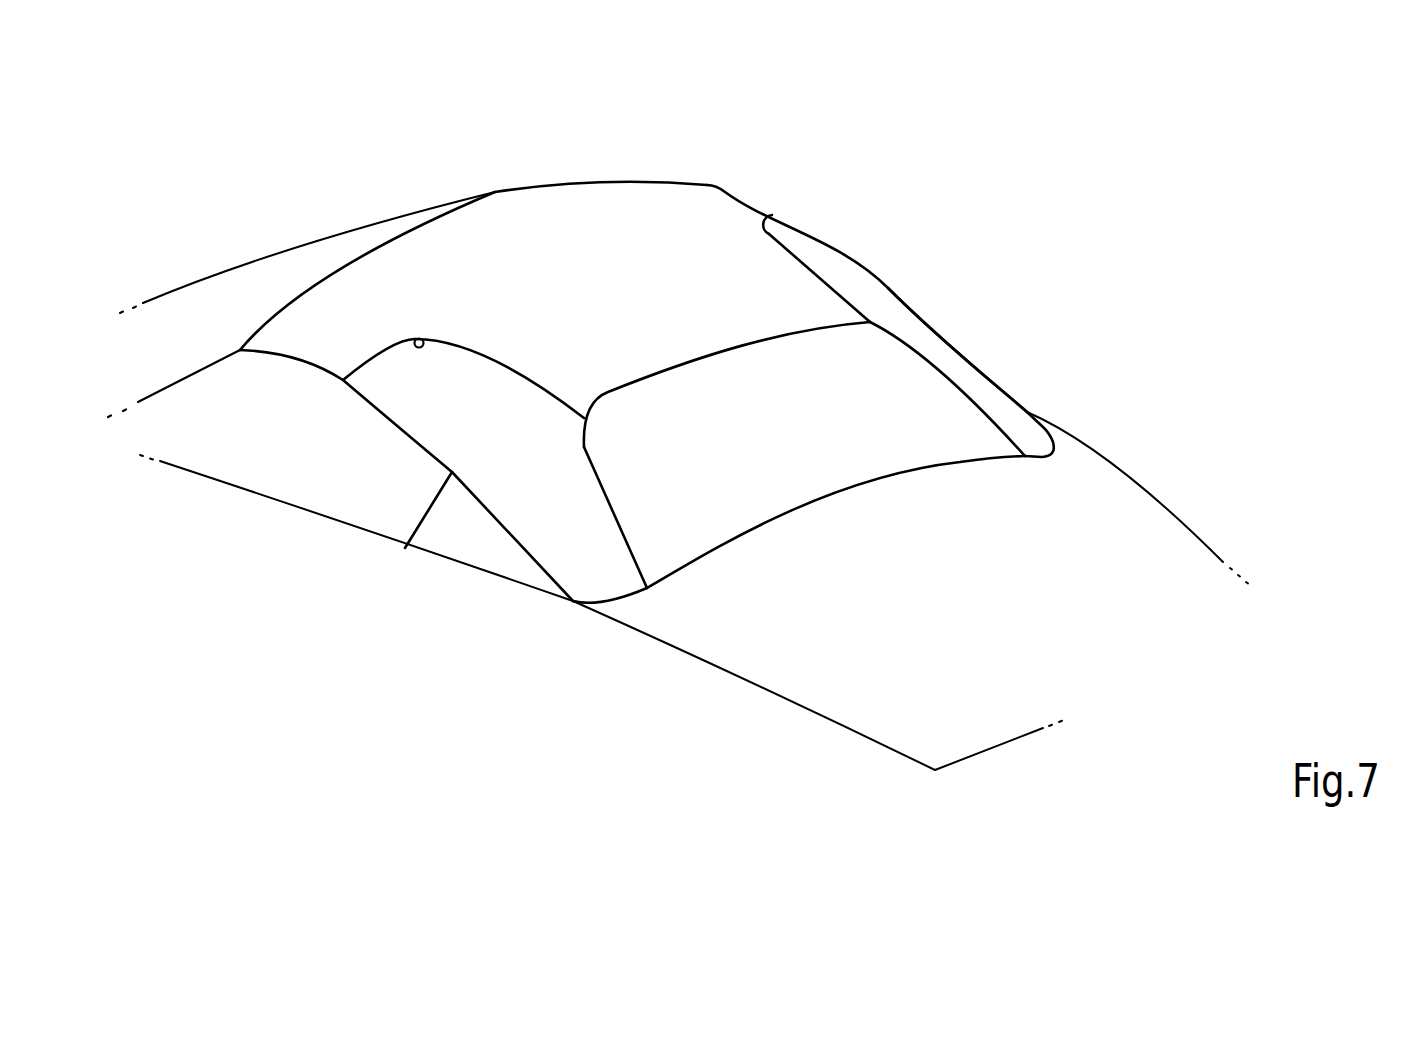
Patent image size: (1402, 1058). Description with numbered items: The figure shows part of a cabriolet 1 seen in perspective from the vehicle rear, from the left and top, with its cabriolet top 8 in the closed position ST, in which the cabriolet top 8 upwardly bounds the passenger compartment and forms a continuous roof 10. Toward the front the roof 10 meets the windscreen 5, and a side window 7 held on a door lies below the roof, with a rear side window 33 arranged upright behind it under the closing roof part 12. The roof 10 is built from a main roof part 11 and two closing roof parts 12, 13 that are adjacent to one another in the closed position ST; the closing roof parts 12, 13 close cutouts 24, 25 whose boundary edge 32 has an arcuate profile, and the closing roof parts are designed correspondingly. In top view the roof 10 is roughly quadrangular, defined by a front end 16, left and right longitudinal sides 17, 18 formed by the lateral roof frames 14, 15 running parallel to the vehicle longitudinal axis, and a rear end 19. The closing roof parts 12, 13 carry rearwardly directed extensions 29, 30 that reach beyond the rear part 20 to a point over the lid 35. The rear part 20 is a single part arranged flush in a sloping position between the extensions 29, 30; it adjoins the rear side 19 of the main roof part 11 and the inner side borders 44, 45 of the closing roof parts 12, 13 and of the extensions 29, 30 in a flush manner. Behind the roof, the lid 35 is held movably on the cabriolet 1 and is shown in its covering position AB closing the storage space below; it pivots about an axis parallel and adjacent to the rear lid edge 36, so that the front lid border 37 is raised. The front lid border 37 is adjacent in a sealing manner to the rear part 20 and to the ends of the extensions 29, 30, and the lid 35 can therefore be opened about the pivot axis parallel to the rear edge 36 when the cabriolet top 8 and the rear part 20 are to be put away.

The cabriolet 1 is at (801, 126).
The windscreen 5 is at (312, 256).
The side window 7 is at (318, 495).
The cabriolet top 8 is at (813, 223).
The roof 10 is at (799, 211).
The main roof part 11 is at (710, 203).
The closing roof part 12 is at (825, 268).
The closing roof part 13 is at (516, 398).
The lateral roof frame 14 is at (406, 475).
The lateral roof frame 15 is at (957, 331).
The front end 16 is at (413, 225).
The longitudinal side 17 is at (372, 407).
The longitudinal side 18 is at (913, 308).
The rear end 19 is at (665, 372).
The rear part 20 is at (799, 529).
The cutout 24 is at (482, 350).
The cutout 25 is at (760, 229).
The extension 29 is at (1005, 407).
The extension 30 is at (608, 582).
The boundary edge 32 is at (423, 339).
The rear side window 33 is at (472, 548).
The lid 35 is at (1173, 545).
The rear lid edge 36 is at (1010, 743).
The front lid border 37 is at (918, 473).
The inner side border 44 is at (627, 537).
The inner side border 45 is at (955, 378).
The closed position ST is at (900, 260).
The covering position AB is at (1137, 458).